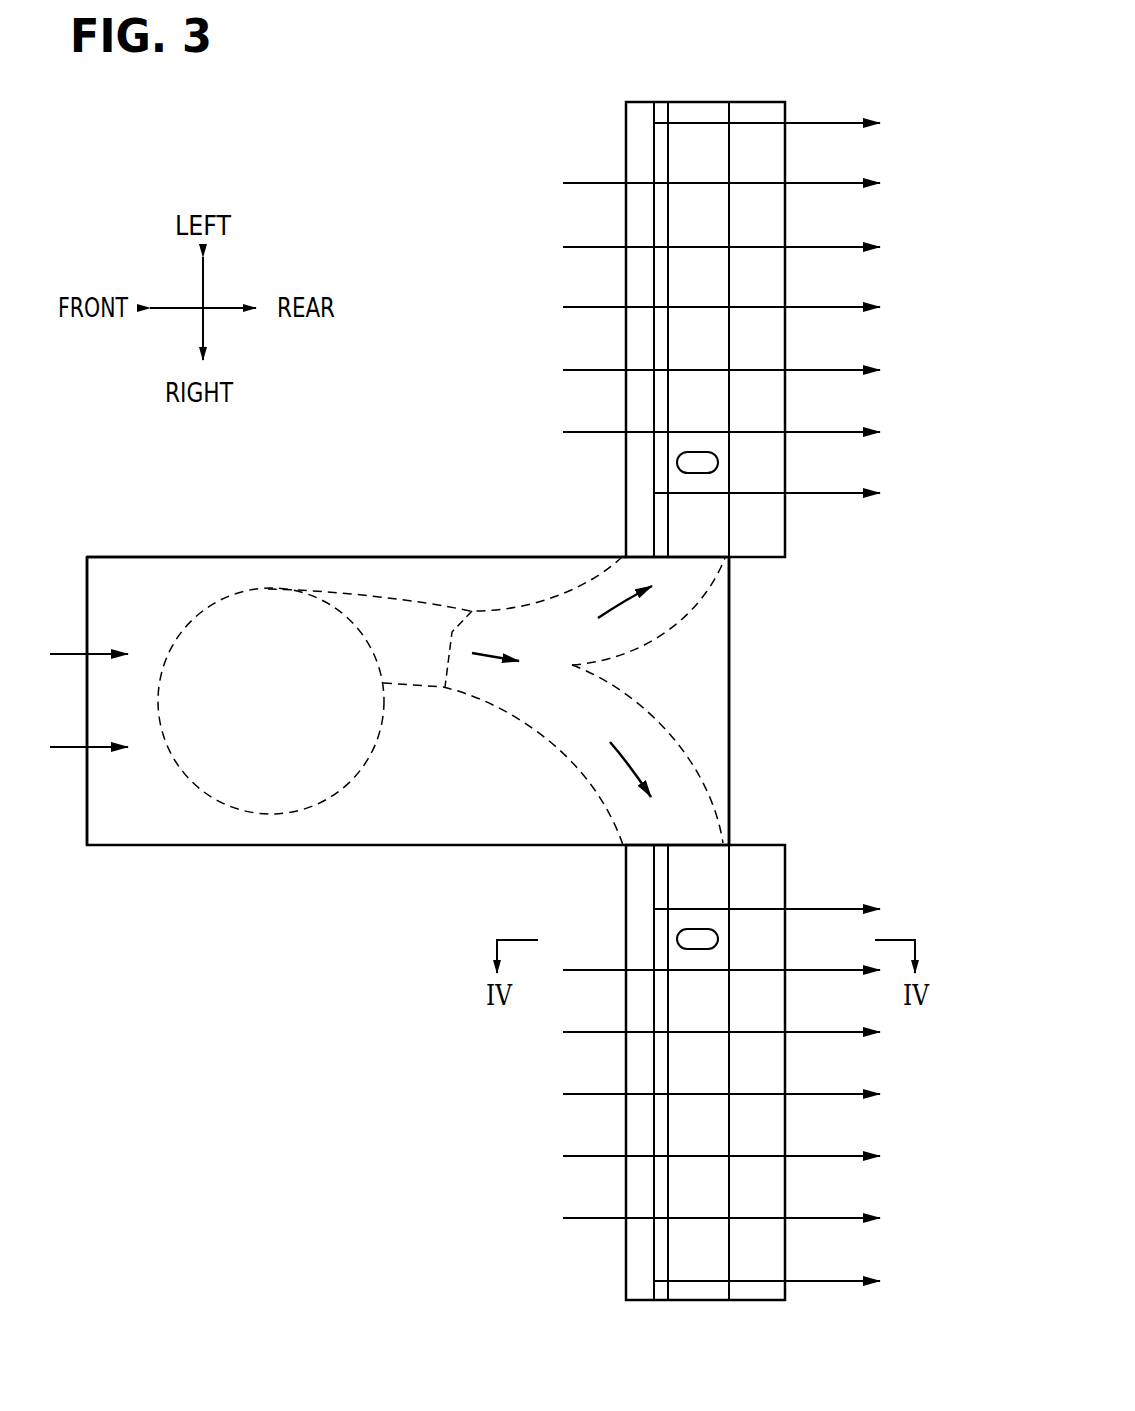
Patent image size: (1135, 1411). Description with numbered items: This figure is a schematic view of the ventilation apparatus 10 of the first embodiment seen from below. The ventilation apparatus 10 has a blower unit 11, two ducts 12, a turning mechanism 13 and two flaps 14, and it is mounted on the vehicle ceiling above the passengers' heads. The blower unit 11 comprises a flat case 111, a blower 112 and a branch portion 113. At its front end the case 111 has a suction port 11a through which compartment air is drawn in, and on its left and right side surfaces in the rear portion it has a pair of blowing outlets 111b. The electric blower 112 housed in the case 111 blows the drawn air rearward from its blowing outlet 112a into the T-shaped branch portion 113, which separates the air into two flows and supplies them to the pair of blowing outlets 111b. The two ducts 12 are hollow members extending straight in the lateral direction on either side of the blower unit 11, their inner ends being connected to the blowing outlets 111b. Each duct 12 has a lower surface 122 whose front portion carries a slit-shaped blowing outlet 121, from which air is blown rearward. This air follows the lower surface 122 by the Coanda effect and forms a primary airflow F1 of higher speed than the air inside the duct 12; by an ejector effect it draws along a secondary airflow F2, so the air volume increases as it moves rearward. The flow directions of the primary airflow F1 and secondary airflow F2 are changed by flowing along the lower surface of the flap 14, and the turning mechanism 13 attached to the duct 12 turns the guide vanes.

The ventilation apparatus 10 is at (412, 159).
The blower unit 11 is at (151, 556).
The inlet 11a is at (87, 797).
The case 111 is at (296, 557).
The blowing outlets 111b is at (705, 557).
The blower 112 is at (262, 812).
The blowing outlet 112a is at (472, 607).
The branch portion 113 is at (492, 703).
The duct 12 is at (622, 101).
The blowing outlet 121 is at (660, 150).
The lower surface 122 is at (697, 118).
The turning mechanism 13 is at (670, 462).
The flap 14 is at (758, 100).
The primary airflow F1 is at (848, 120).
The secondary airflow F2 is at (843, 182).